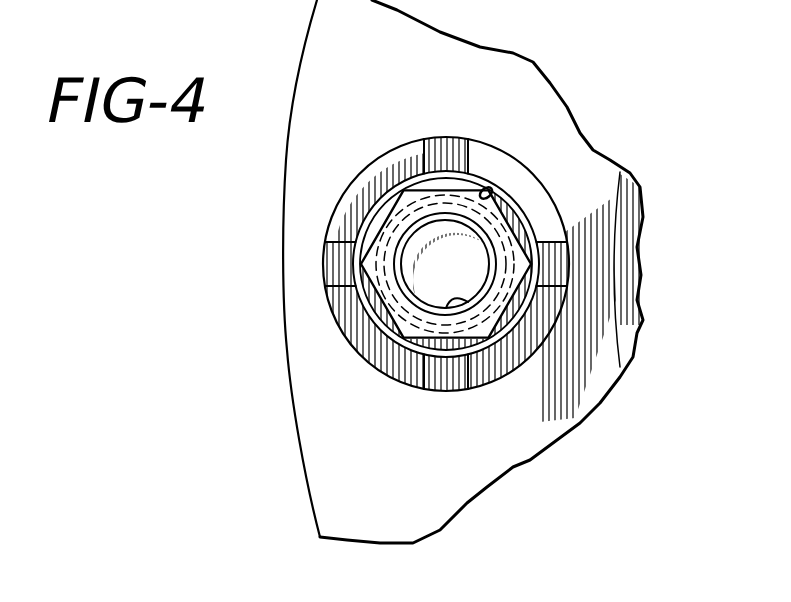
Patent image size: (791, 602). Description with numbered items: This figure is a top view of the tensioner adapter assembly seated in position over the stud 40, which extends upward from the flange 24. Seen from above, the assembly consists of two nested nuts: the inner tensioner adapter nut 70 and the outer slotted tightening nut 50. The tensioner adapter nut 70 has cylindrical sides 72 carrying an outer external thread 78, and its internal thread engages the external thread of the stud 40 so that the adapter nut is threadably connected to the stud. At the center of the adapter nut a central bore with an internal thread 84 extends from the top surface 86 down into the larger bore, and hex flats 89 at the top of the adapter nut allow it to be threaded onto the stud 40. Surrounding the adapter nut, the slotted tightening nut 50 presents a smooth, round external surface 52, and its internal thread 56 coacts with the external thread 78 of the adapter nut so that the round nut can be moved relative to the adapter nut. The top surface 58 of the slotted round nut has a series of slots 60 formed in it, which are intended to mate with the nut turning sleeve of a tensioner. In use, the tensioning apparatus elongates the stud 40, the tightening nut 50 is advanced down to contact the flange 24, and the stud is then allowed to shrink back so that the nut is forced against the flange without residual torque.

The flange 24 is at (303, 453).
The stud 40 is at (445, 253).
The slotted tightening nut 50 is at (441, 272).
The external surface 52 is at (380, 157).
The internal thread 56 is at (480, 187).
The top surface 58 is at (407, 160).
The slots 60 is at (445, 157).
The tensioner adapter nut 70 is at (367, 300).
The cylindrical sides 72 is at (357, 238).
The outer external thread 78 is at (388, 230).
The internal thread 84 is at (458, 302).
The top surface 86 is at (406, 352).
The hex flats 89 is at (392, 340).